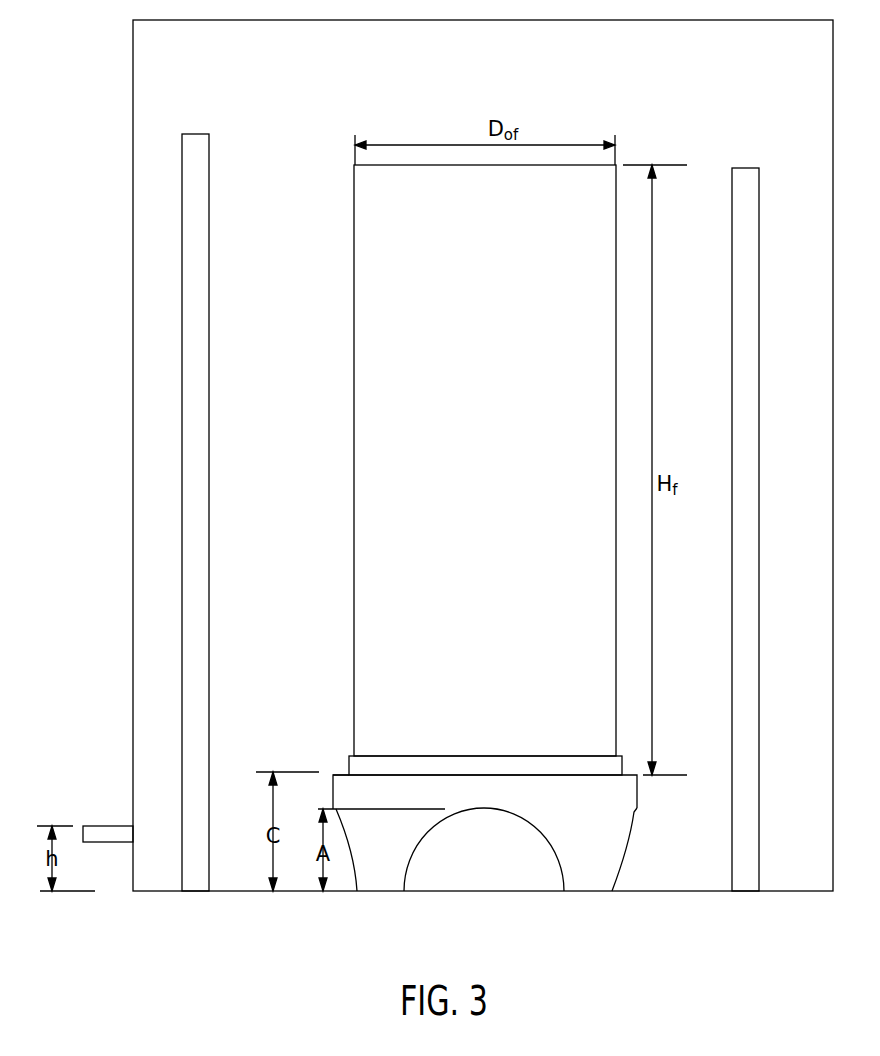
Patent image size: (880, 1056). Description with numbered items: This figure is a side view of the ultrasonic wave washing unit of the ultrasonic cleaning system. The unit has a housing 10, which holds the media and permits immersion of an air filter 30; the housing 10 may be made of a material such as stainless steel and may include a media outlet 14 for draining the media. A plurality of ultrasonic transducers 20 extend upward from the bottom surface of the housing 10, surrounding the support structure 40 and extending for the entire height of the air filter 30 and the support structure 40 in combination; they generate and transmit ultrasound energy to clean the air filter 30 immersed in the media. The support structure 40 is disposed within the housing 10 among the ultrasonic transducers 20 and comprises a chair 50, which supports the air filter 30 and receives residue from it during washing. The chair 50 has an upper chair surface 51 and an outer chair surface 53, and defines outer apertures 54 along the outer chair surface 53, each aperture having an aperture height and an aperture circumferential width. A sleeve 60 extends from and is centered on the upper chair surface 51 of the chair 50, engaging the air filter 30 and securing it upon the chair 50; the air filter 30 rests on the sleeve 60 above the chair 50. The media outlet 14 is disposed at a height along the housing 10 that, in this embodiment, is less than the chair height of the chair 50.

The housing 10 is at (133, 410).
The media outlet 14 is at (108, 826).
The ultrasonic transducers 20 is at (182, 208).
The air filter 30 is at (370, 440).
The support structure 40 is at (272, 745).
The chair 50 is at (333, 797).
The upper chair surface 51 is at (335, 775).
The outer chair surface 53 is at (610, 873).
The outer apertures 54 is at (541, 851).
The sleeve 60 is at (352, 757).